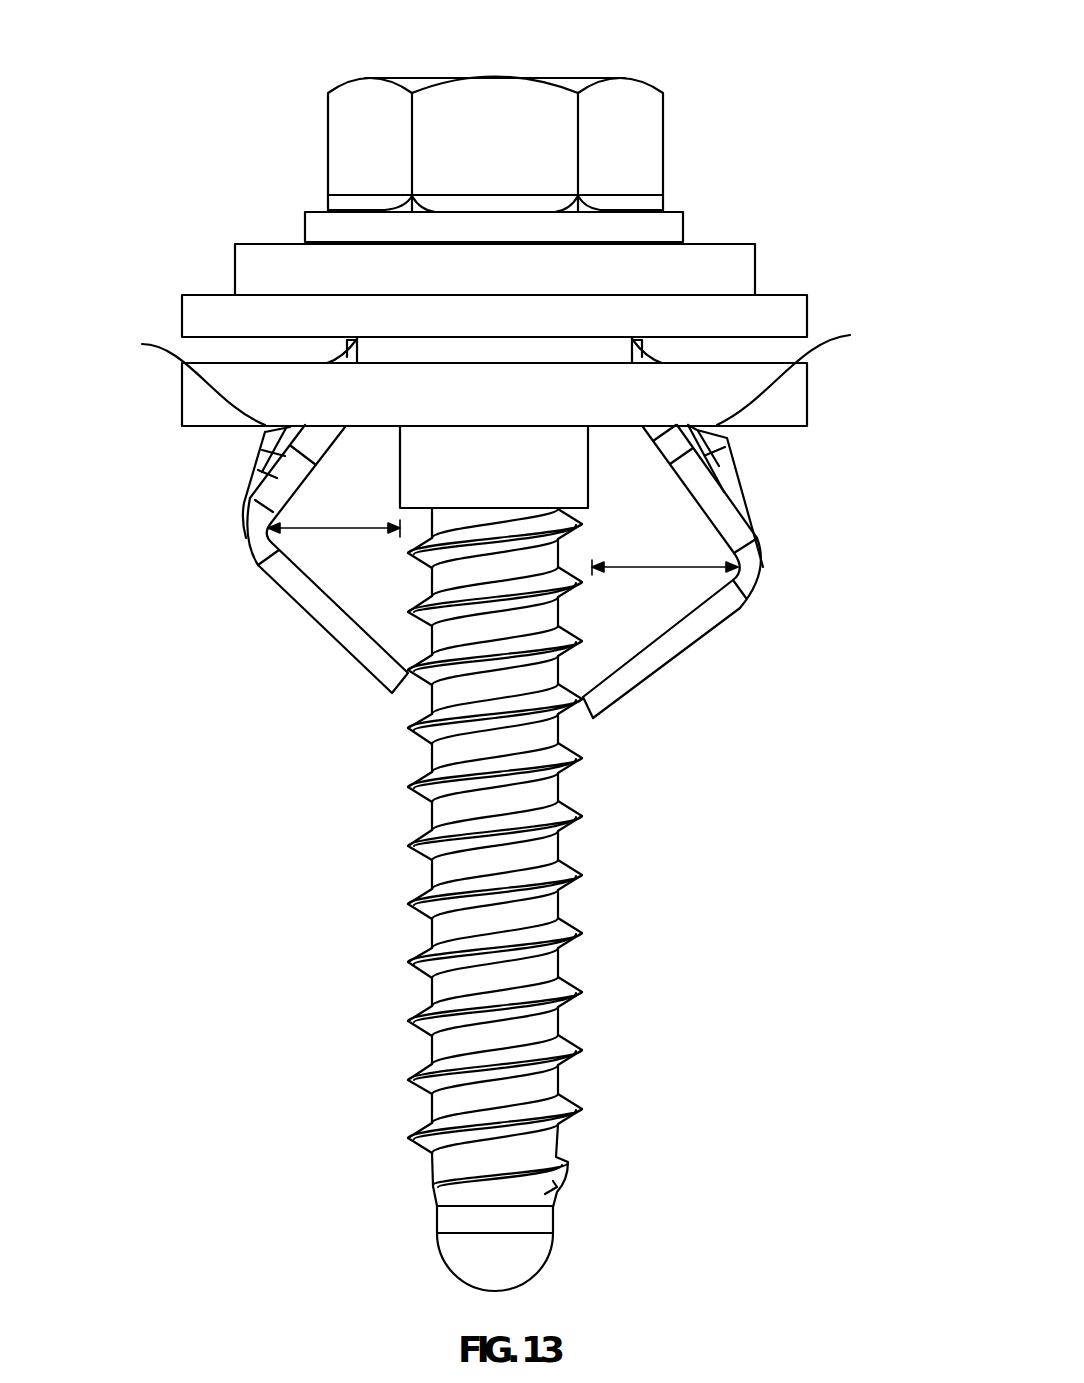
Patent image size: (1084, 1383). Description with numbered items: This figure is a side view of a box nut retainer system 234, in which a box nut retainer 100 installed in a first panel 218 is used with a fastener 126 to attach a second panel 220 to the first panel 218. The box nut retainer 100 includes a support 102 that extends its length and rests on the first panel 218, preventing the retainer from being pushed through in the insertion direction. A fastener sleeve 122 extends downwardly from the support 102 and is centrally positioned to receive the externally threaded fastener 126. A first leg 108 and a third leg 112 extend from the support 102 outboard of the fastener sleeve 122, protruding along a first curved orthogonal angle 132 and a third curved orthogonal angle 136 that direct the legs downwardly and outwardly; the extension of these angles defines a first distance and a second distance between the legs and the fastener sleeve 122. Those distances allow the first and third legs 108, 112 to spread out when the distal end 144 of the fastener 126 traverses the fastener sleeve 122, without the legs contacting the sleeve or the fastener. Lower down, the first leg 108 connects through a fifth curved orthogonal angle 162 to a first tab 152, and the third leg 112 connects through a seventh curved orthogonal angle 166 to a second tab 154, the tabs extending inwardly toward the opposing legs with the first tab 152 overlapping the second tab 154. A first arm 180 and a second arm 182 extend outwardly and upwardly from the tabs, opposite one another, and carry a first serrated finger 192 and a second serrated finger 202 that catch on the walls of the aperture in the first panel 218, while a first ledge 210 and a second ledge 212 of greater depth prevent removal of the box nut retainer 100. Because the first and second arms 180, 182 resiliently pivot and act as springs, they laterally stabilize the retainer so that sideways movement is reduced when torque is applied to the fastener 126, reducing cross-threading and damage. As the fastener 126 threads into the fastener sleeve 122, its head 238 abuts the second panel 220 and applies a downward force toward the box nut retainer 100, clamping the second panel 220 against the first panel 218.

The box nut retainer 100 is at (726, 672).
The support 102 is at (375, 358).
The first leg 108 is at (280, 487).
The third leg 112 is at (718, 515).
The fastener sleeve 122 is at (568, 470).
The fastener 126 is at (642, 145).
The first curved orthogonal angle 132 is at (347, 345).
The third curved orthogonal angle 136 is at (650, 345).
The distal end 144 is at (468, 1270).
The first tab 152 is at (325, 617).
The second tab 154 is at (627, 685).
The fifth curved orthogonal angle 162 is at (250, 533).
The seventh curved orthogonal angle 166 is at (750, 572).
The first arm 180 is at (258, 478).
The second arm 182 is at (732, 487).
The first serrated finger 192 is at (179, 378).
The second serrated finger 202 is at (807, 371).
The first ledge 210 is at (265, 445).
The second ledge 212 is at (723, 452).
The first panel 218 is at (787, 402).
The second panel 220 is at (787, 318).
The box nut retainer system 234 is at (218, 40).
The head 238 is at (365, 92).